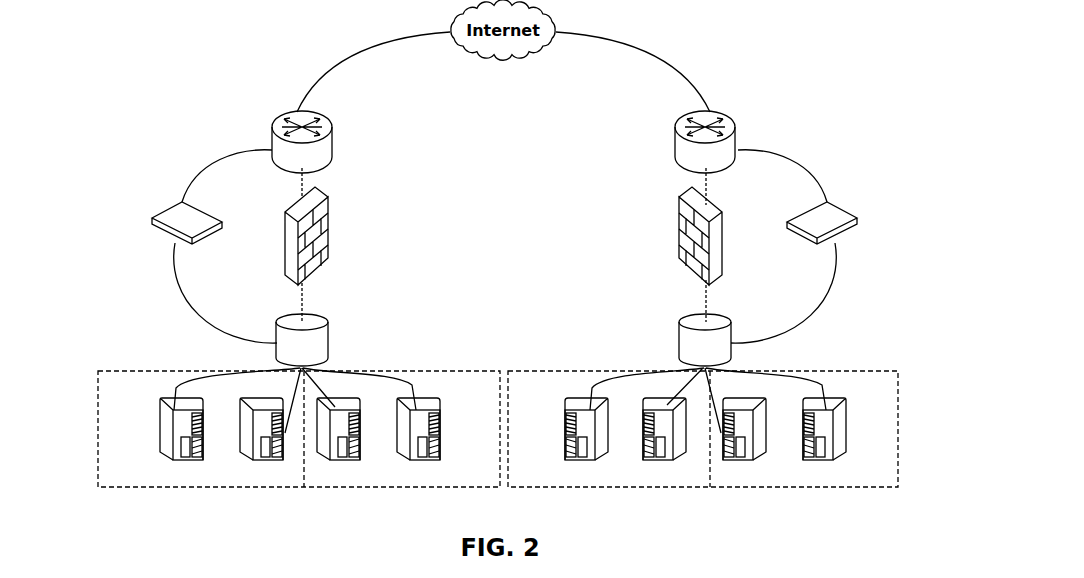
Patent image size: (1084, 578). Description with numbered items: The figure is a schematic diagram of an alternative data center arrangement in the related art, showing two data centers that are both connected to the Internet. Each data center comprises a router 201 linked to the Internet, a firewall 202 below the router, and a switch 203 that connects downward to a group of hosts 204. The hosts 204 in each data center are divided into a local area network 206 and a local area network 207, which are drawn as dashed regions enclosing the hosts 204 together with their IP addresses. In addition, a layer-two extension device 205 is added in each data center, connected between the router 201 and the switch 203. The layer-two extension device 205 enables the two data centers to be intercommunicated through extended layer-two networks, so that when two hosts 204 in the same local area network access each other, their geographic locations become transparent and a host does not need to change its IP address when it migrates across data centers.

The router 201 is at (285, 122).
The firewall 202 is at (290, 212).
The switch 203 is at (292, 322).
The hosts 204 is at (172, 408).
The layer-2 extension device 205 is at (170, 212).
The local area network 206 is at (247, 380).
The local area network 207 is at (458, 380).